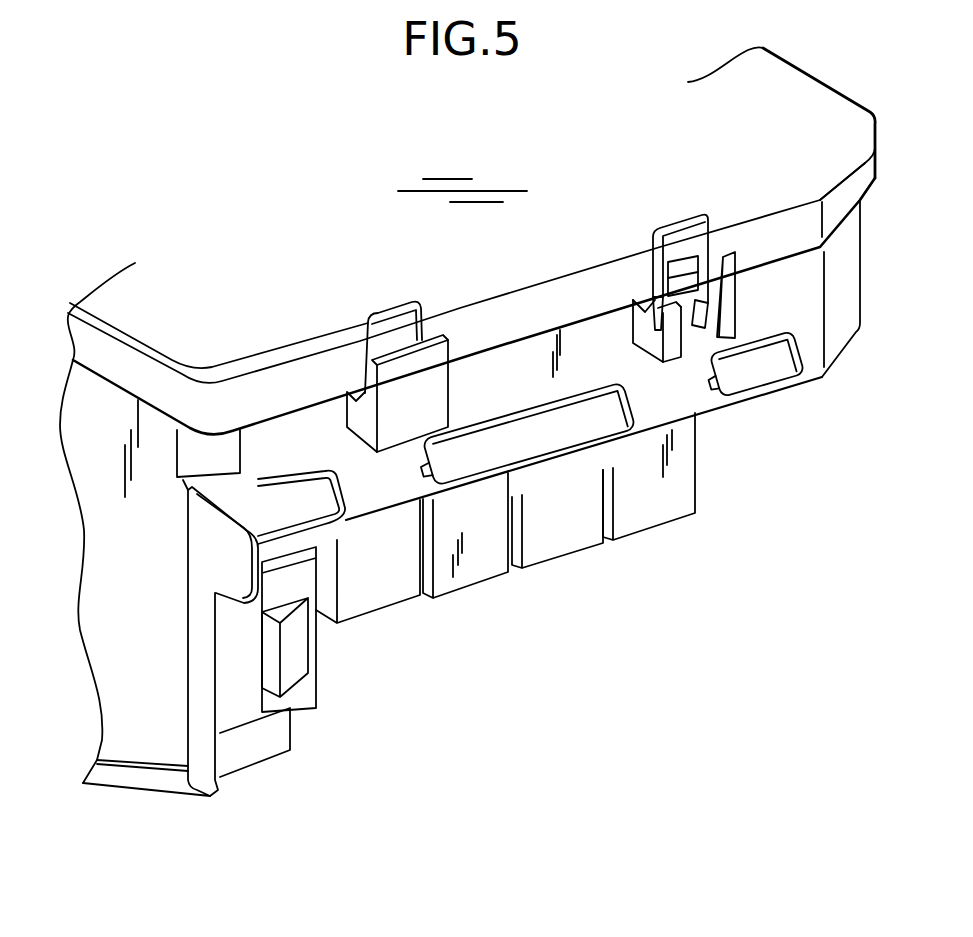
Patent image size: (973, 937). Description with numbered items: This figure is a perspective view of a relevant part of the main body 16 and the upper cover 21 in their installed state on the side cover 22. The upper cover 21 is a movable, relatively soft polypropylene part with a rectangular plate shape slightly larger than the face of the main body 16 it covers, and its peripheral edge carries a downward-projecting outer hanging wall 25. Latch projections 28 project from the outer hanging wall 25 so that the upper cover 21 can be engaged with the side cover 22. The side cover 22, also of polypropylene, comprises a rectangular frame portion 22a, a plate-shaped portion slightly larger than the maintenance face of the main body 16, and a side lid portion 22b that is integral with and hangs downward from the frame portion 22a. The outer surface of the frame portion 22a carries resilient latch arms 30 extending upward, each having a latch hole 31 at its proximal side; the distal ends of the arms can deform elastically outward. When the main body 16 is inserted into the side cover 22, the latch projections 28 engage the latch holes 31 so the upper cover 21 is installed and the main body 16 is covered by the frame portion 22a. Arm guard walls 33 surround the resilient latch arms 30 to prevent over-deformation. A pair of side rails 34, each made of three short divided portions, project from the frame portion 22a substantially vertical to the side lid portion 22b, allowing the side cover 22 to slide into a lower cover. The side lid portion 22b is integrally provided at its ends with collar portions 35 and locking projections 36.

The main body 16 is at (653, 523).
The upper cover 21 is at (814, 83).
The side cover 22 is at (807, 383).
The rectangular frame portion 22a is at (855, 297).
The side lid portion 22b is at (153, 735).
The outer hanging wall 25 is at (860, 163).
The latch projection 28 is at (703, 258).
The resilient latch arm 30 is at (396, 316).
The latch hole 31 is at (655, 226).
The arm guard wall 33 is at (372, 387).
The side rail 34 is at (328, 507).
The collar portion 35 is at (225, 562).
The locking projection 36 is at (305, 655).